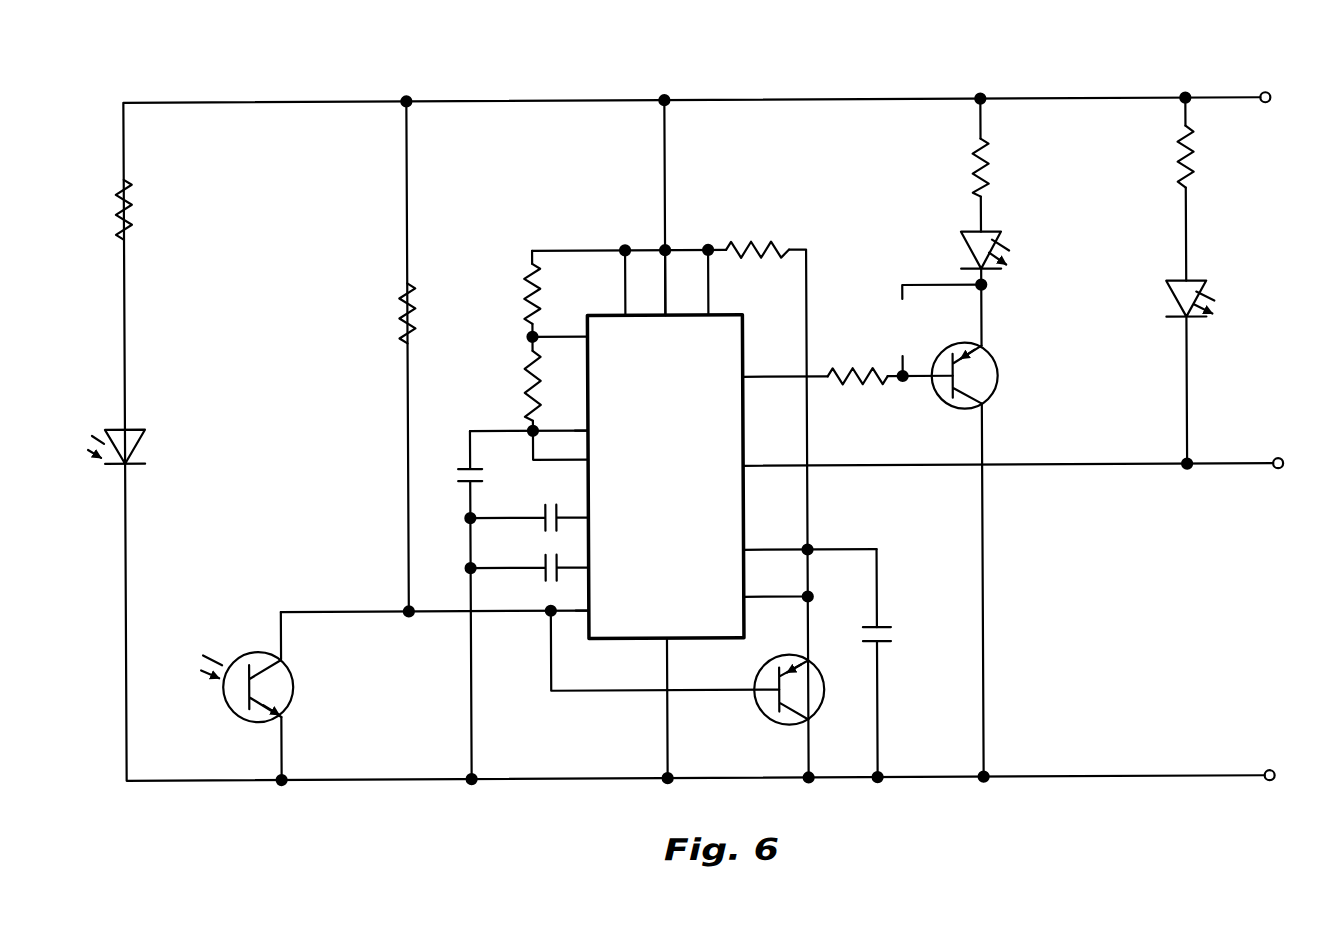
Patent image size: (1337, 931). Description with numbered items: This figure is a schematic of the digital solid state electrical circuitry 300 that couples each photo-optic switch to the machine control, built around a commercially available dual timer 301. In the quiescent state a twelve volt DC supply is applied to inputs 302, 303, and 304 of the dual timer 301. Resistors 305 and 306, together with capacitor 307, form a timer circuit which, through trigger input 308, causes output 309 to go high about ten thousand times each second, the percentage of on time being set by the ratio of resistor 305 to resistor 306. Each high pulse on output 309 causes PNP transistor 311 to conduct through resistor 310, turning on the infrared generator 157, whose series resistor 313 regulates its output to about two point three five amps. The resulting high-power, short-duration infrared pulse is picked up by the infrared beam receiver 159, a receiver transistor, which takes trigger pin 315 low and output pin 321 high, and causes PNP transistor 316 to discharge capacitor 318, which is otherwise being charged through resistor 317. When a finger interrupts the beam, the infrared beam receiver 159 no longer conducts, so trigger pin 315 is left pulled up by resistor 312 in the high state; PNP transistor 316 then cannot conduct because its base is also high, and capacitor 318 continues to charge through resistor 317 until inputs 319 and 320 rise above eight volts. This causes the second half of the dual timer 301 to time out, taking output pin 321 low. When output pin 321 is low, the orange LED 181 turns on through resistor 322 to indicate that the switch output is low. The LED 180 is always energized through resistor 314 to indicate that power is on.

The digital solid state electrical circuitry 300 is at (1230, 80).
The dual timer 301 is at (714, 640).
The input 302 is at (625, 313).
The input 303 is at (668, 312).
The input 304 is at (712, 313).
The resistor 305 is at (521, 291).
The resistor 306 is at (521, 375).
The capacitor 307 is at (480, 483).
The trigger input 308 is at (588, 433).
The output 309 is at (744, 375).
The resistor 310 is at (858, 386).
The PNP transistor 311 is at (1000, 378).
The resistor 312 is at (400, 308).
The series resistor 313 is at (992, 170).
The resistor 314 is at (134, 206).
The trigger pin 315 is at (588, 608).
The PNP transistor 316 is at (810, 718).
The resistor 317 is at (754, 240).
The capacitor 318 is at (885, 642).
The input 319 is at (745, 549).
The input 320 is at (745, 596).
The output pin 321 is at (744, 465).
The resistor 322 is at (1196, 172).
The infrared generator 157 is at (1000, 240).
The infrared beam receiver 159 is at (293, 684).
The LED 180 is at (140, 440).
The orange LED 181 is at (1208, 282).